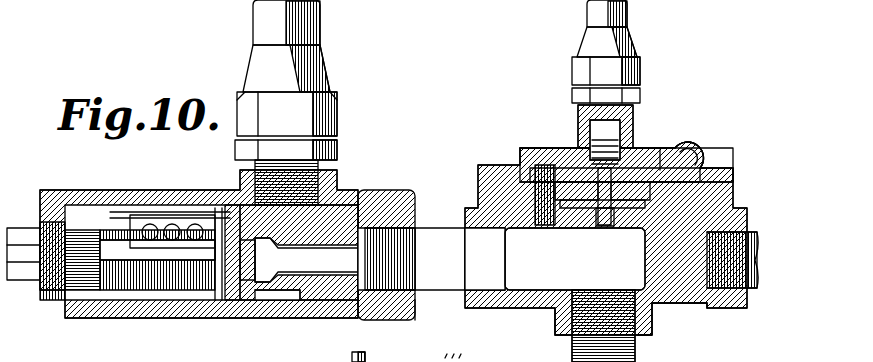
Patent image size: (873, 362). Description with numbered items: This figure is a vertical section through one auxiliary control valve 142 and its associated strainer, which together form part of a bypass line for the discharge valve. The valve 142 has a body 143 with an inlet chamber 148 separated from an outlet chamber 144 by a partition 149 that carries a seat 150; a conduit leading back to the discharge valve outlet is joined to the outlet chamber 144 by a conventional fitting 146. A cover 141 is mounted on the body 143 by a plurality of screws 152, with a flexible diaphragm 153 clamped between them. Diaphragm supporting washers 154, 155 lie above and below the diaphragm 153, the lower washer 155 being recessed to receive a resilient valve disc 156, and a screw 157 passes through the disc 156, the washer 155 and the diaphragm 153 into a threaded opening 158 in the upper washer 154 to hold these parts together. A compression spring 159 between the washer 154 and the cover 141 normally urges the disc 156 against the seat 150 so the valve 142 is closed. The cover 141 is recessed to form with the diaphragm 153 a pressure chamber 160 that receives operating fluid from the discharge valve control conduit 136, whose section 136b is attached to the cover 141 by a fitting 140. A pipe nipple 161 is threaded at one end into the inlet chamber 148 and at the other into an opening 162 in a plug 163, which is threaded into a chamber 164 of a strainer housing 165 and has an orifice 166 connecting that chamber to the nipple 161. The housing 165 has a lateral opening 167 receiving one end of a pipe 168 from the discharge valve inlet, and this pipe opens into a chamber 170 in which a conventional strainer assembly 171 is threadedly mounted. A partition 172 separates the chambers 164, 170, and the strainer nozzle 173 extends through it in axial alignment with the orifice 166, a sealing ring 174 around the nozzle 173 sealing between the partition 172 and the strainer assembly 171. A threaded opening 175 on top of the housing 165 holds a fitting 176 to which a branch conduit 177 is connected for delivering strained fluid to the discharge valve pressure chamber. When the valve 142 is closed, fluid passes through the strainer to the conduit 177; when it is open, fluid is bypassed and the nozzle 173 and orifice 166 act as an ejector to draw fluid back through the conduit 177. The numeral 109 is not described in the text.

The conduit 109 is at (434, 354).
The discharge valve control conduit 136 is at (350, 355).
The section of discharge valve control conduit 136b is at (628, 16).
The fitting 140 is at (640, 98).
The cover 141 is at (672, 150).
The auxiliary control valve 142 is at (665, 312).
The body 143 is at (540, 318).
The outlet chamber 144 is at (686, 303).
The fitting 146 is at (758, 258).
The inlet chamber 148 is at (520, 308).
The partition 149 is at (645, 258).
The seat 150 is at (640, 212).
The screws 152 is at (695, 158).
The flexible diaphragm 153 is at (733, 172).
The diaphragm supporting washer 154 is at (563, 165).
The diaphragm supporting washer 155 is at (565, 205).
The resilient valve disc 156 is at (580, 208).
The screw 157 is at (615, 208).
The opening 158 is at (612, 178).
The compression spring 159 is at (633, 145).
The pressure chamber 160 is at (545, 165).
The pipe nipple 161 is at (438, 228).
The opening 162 is at (402, 185).
The plug 163 is at (418, 316).
The chamber 164 is at (270, 300).
The strainer housing 165 is at (160, 318).
The orifice 166 is at (298, 260).
The lateral opening 167 is at (172, 215).
The pipe 168 is at (218, 208).
The chamber 170 is at (198, 300).
The strainer assembly 171 is at (150, 210).
The partition 172 is at (218, 318).
The nozzle 173 is at (245, 240).
The sealing ring 174 is at (232, 205).
The threaded opening 175 is at (340, 180).
The fitting 176 is at (337, 150).
The branch conduit 177 is at (268, 18).